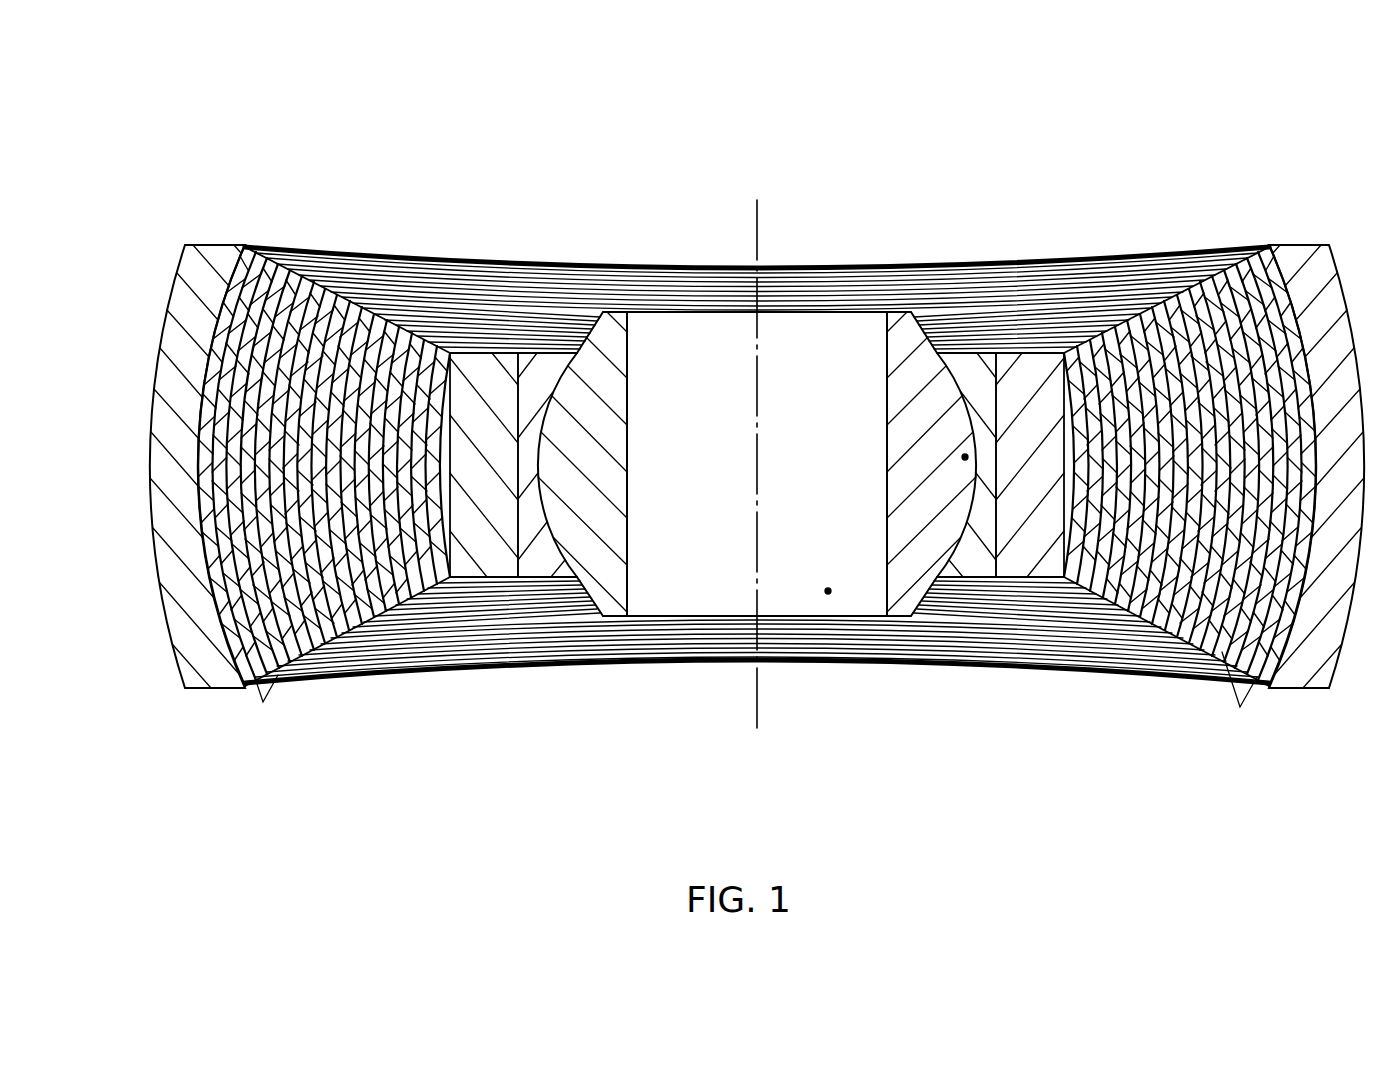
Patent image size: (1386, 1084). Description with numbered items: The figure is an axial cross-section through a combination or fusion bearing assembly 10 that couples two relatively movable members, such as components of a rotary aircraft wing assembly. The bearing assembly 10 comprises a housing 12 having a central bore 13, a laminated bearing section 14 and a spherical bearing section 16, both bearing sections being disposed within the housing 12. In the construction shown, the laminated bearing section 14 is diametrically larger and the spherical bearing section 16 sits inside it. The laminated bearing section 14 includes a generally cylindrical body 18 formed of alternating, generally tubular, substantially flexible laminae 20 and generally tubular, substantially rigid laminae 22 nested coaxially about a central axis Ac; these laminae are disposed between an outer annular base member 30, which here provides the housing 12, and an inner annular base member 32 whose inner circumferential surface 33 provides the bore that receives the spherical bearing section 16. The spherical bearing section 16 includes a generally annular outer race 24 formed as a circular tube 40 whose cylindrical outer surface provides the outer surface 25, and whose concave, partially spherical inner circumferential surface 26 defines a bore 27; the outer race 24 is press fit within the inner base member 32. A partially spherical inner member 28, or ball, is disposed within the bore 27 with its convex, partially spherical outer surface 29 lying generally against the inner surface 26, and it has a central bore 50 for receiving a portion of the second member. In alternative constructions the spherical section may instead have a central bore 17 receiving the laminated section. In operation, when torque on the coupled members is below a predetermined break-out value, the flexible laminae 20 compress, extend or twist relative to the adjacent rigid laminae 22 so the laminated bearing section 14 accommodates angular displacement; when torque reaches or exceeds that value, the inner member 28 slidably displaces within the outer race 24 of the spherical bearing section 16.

The bearing assembly 10 is at (296, 157).
The housing 12 is at (134, 334).
The central bore 13 is at (287, 246).
The laminated bearing section 14 is at (413, 231).
The spherical bearing section 16 is at (916, 246).
The central bore 17 is at (634, 593).
The cylindrical body 18 is at (404, 670).
The flexible laminae 20 is at (263, 700).
The rigid laminae 22 is at (1240, 707).
The outer race 24 is at (981, 344).
The outer surface 25 is at (1000, 490).
The inner circumferential surface 26 is at (950, 372).
The bore 27 is at (970, 456).
The inner member 28 is at (613, 310).
The outer surface 29 is at (524, 452).
The outer base member 30 is at (149, 457).
The inner base member 32 is at (491, 347).
The inner circumferential surface 33 is at (528, 562).
The circular tube 40 is at (546, 360).
The central bore 50 is at (829, 594).
The central axis Ac is at (762, 207).